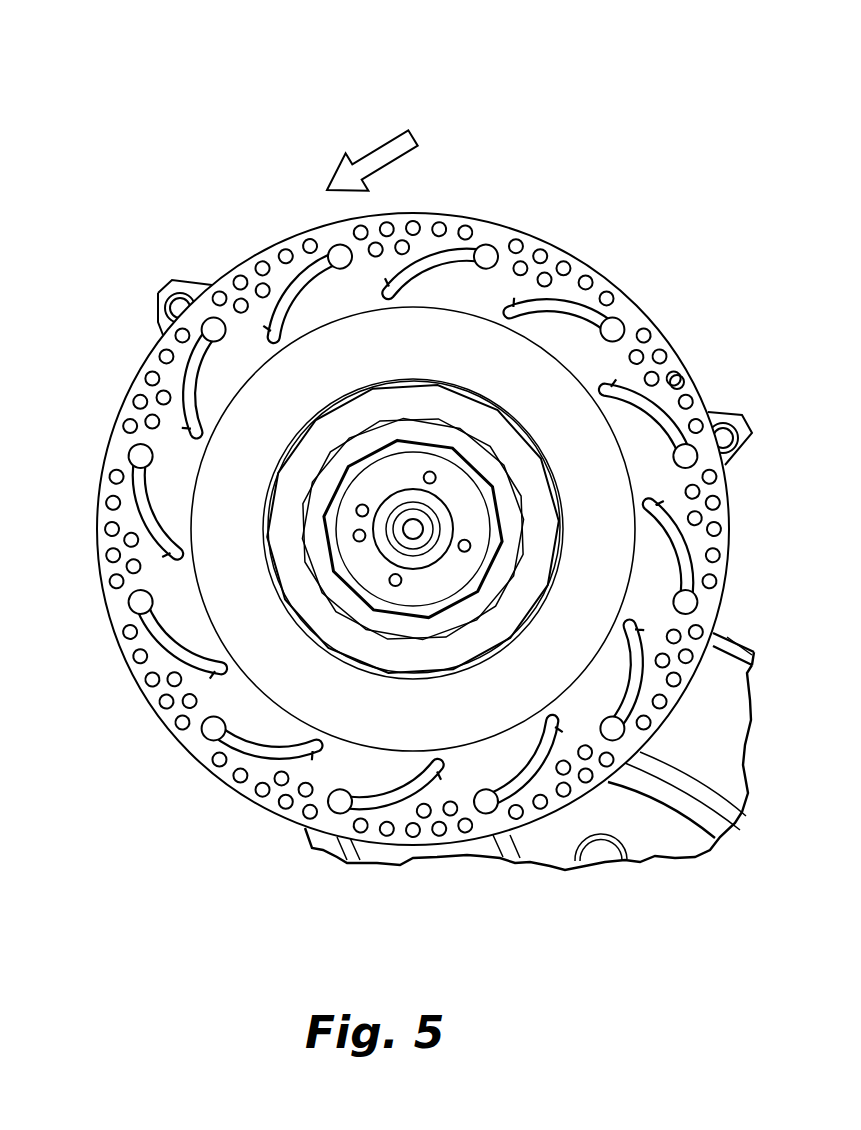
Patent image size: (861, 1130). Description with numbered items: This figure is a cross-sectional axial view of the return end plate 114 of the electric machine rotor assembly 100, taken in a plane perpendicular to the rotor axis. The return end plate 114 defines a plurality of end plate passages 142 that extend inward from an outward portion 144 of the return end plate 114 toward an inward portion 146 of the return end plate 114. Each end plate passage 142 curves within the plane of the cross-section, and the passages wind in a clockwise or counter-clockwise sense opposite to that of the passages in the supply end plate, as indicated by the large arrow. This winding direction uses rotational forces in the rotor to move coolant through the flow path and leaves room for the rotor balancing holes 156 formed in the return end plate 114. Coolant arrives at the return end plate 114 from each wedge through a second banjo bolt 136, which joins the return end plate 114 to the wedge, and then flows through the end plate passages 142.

The electric machine rotor assembly 100 is at (108, 218).
The return end plate 114 is at (413, 516).
The second banjo bolt 136 is at (487, 254).
The end plate passages 142 is at (447, 262).
The outward portion 144 is at (567, 252).
The inward portion 146 is at (486, 398).
The rotor balancing holes 156 is at (678, 380).